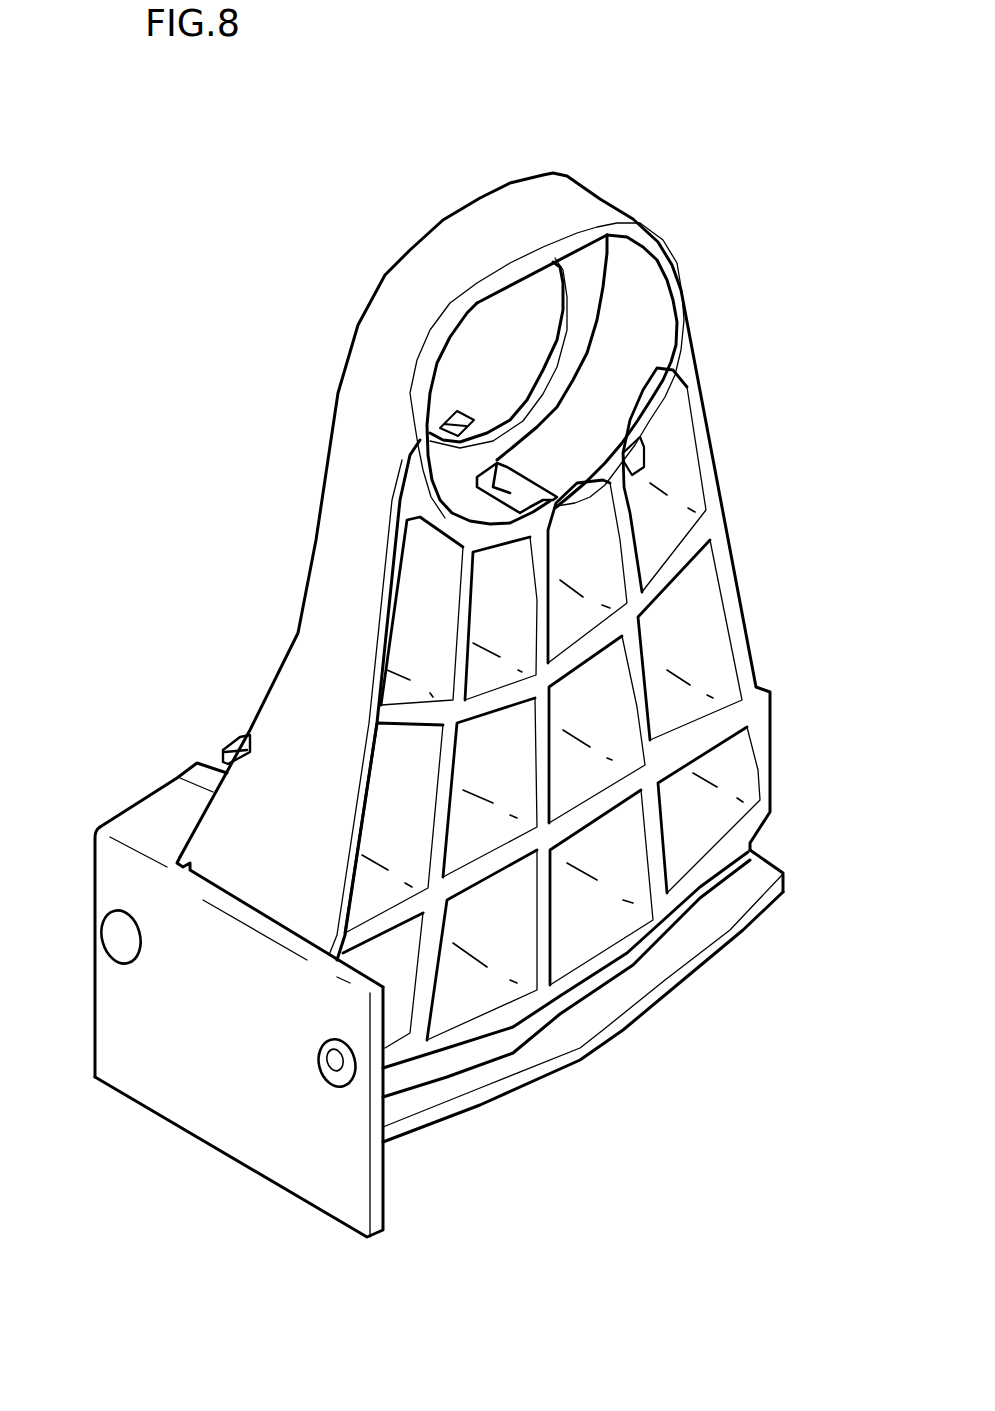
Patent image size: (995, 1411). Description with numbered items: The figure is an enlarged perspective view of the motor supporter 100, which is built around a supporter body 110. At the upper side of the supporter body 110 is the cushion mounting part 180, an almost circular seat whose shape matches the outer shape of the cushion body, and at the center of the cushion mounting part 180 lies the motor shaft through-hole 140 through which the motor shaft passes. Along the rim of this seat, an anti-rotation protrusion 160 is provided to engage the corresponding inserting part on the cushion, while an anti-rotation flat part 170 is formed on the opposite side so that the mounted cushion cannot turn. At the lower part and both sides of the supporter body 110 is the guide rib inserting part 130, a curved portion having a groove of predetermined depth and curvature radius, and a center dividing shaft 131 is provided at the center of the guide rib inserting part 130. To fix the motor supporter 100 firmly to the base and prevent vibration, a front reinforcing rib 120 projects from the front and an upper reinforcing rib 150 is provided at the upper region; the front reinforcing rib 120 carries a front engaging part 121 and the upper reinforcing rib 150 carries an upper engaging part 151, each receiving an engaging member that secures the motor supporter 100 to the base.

The motor supporter 100 is at (258, 246).
The supporter body 110 is at (378, 715).
The front reinforcing rib 120 is at (320, 1193).
The front engaging part 121 is at (333, 1080).
The guide rib inserting part 130 is at (590, 1004).
The center dividing shaft 131 is at (440, 1067).
The motor shaft through-hole 140 is at (517, 317).
The upper reinforcing rib 150 is at (147, 823).
The upper engaging part 151 is at (220, 763).
The anti-rotation protrusion 160 is at (477, 475).
The anti-rotation flat part 170 is at (537, 417).
The cushion mounting part 180 is at (557, 251).